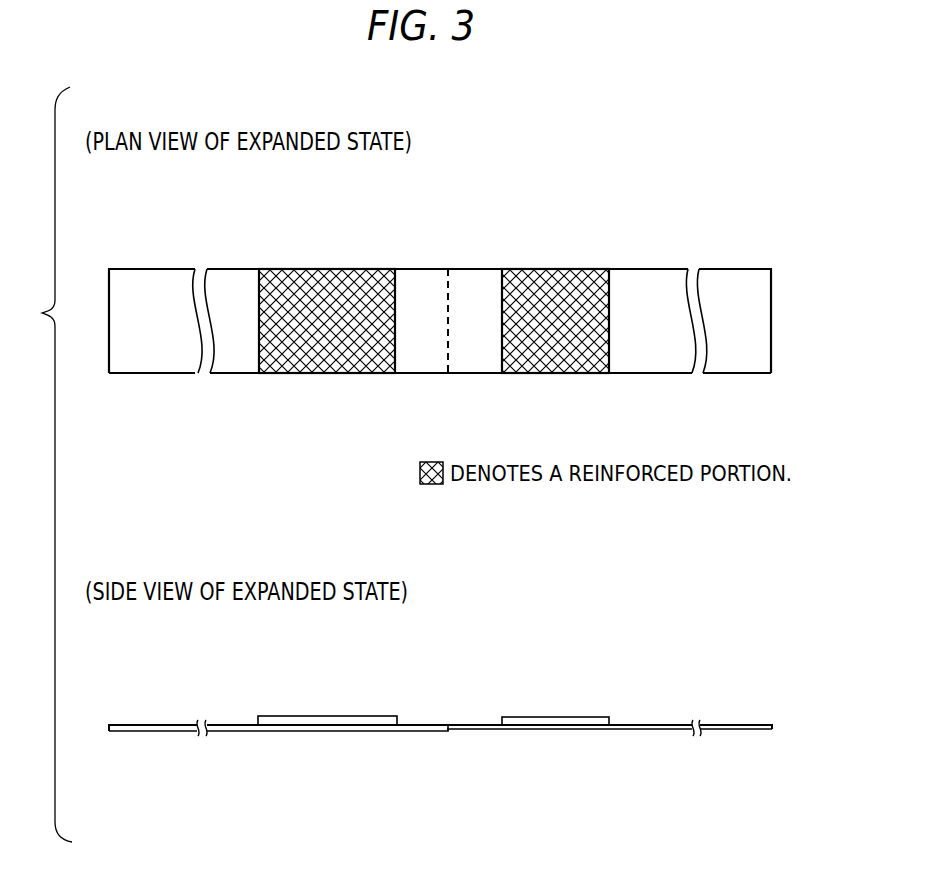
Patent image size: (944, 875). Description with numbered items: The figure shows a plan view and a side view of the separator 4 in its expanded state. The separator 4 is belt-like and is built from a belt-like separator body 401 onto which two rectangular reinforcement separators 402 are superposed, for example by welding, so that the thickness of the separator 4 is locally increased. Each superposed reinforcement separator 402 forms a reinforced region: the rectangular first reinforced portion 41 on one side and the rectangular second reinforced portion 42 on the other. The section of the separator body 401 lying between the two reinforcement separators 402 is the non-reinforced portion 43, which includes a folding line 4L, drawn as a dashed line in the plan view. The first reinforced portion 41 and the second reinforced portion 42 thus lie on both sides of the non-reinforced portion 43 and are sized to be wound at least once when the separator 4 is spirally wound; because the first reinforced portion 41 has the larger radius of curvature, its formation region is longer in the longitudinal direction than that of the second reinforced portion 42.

The separator 4 is at (176, 239).
The first reinforced portion 41 is at (333, 284).
The second reinforced portion 42 is at (562, 276).
The non-reinforced portion 43 is at (471, 287).
The separator body 401 is at (244, 375).
The reinforcement separator 402 is at (338, 375).
The folding line 4L is at (450, 348).